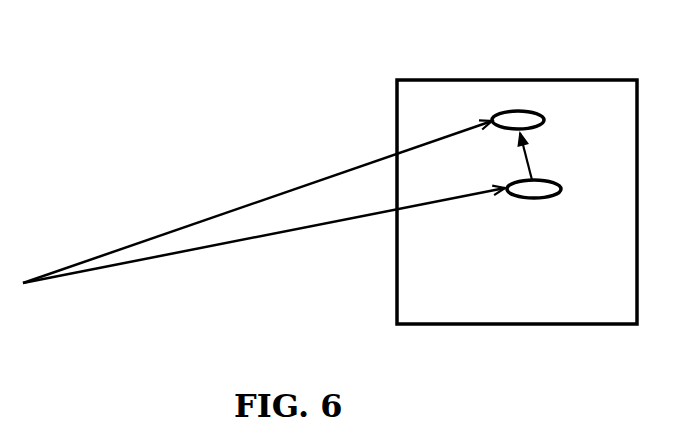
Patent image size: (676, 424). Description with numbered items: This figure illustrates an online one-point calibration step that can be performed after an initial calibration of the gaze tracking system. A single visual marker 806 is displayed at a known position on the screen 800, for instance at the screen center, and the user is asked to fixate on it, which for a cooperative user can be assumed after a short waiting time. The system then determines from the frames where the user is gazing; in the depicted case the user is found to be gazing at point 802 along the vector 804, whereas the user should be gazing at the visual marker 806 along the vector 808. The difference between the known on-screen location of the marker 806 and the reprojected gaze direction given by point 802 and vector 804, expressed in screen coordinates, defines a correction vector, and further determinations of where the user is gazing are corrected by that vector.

The screen 800 is at (493, 73).
The gaze point 802 is at (562, 197).
The visual marker 806 is at (550, 112).
The gaze vector 804 is at (285, 252).
The expected gaze vector 808 is at (291, 183).